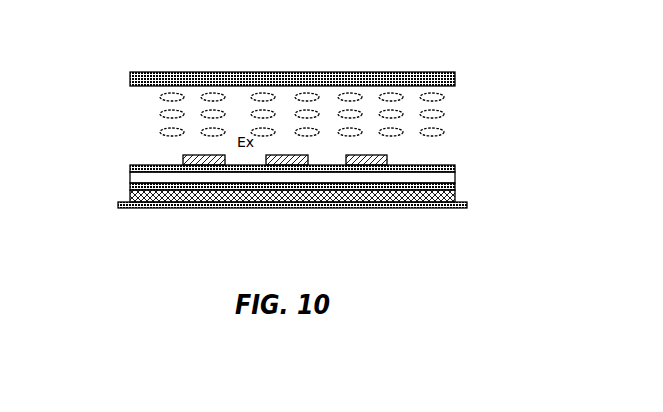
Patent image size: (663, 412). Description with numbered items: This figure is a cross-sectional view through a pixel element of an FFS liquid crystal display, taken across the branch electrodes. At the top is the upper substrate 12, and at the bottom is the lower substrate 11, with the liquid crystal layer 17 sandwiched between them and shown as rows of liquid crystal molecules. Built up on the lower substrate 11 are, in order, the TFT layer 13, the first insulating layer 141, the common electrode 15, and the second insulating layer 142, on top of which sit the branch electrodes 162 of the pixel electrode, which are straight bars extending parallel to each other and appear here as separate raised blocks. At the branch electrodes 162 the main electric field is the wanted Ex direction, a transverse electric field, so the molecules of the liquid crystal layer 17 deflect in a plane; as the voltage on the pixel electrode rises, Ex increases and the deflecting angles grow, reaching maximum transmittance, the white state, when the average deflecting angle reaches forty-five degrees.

The lower substrate 11 is at (467, 205).
The upper substrate 12 is at (455, 80).
The TFT layer 13 is at (130, 198).
The common electrode 15 is at (130, 180).
The liquid crystal layer 17 is at (473, 145).
The first insulating layer 141 is at (455, 186).
The second insulating layer 142 is at (455, 168).
The branch electrodes 162 is at (183, 162).